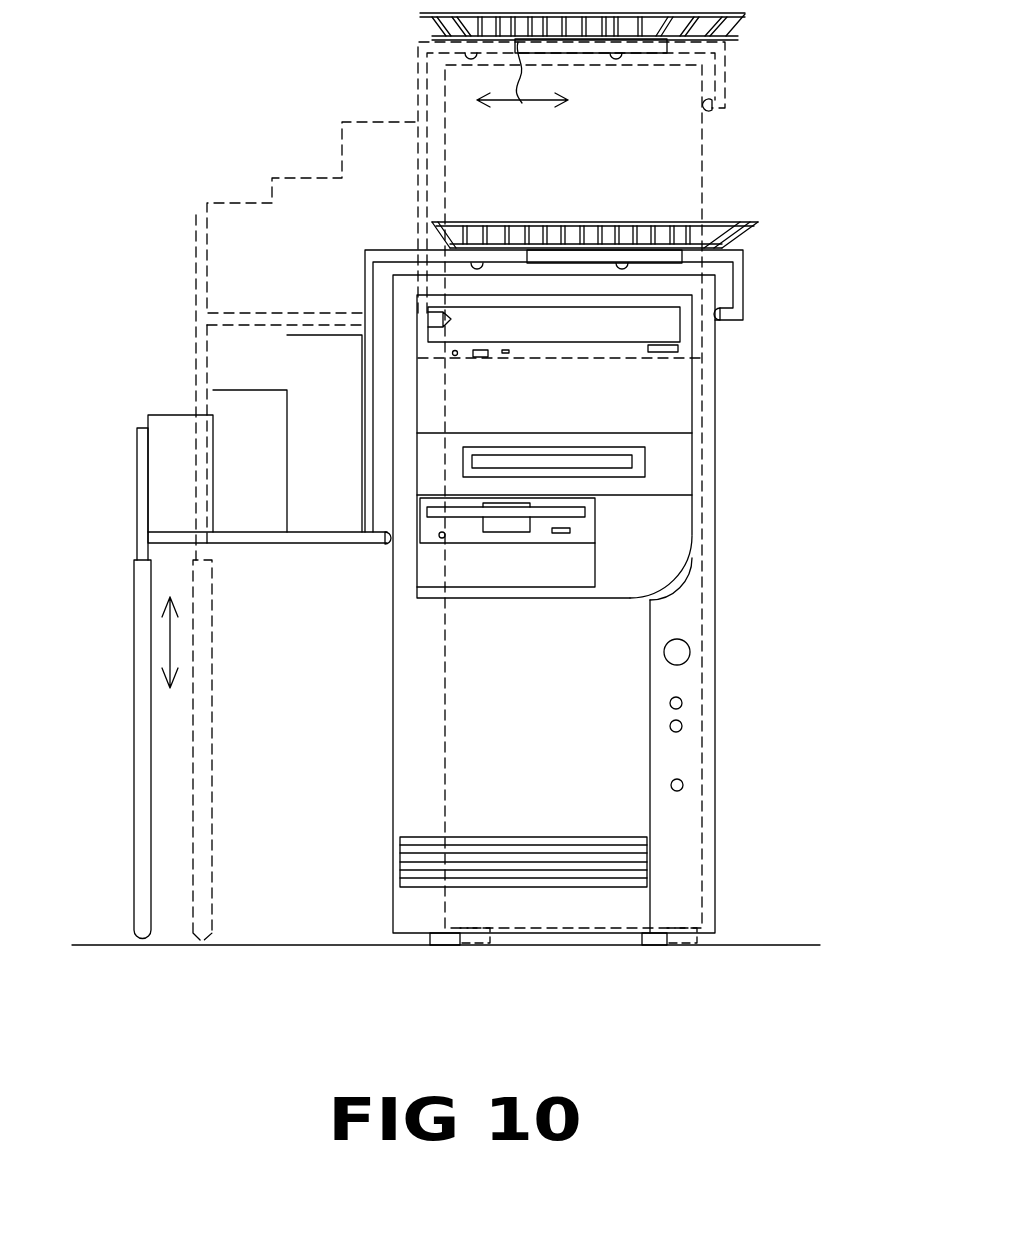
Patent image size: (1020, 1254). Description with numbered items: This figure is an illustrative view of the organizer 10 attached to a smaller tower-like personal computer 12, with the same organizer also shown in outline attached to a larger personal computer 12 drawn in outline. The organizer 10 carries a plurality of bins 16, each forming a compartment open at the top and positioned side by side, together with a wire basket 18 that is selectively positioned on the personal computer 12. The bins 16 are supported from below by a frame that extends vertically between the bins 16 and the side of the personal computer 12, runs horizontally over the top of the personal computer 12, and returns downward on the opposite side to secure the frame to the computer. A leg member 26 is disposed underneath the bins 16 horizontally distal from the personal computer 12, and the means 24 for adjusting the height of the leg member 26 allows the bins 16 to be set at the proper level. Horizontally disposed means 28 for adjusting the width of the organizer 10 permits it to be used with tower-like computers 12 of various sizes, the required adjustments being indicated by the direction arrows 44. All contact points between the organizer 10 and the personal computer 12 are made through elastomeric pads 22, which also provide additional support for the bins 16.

The organizer 10 is at (775, 207).
The personal computer 12 is at (672, 123).
The bins 16 is at (248, 422).
The wire basket 18 is at (740, 233).
The elastomeric pads 22 is at (720, 318).
The means for adjusting the height of the leg member 24 is at (197, 787).
The leg member 26 is at (742, 305).
The means for adjusting the width of the organizer 28 is at (586, 48).
The direction arrows 44 is at (172, 633).